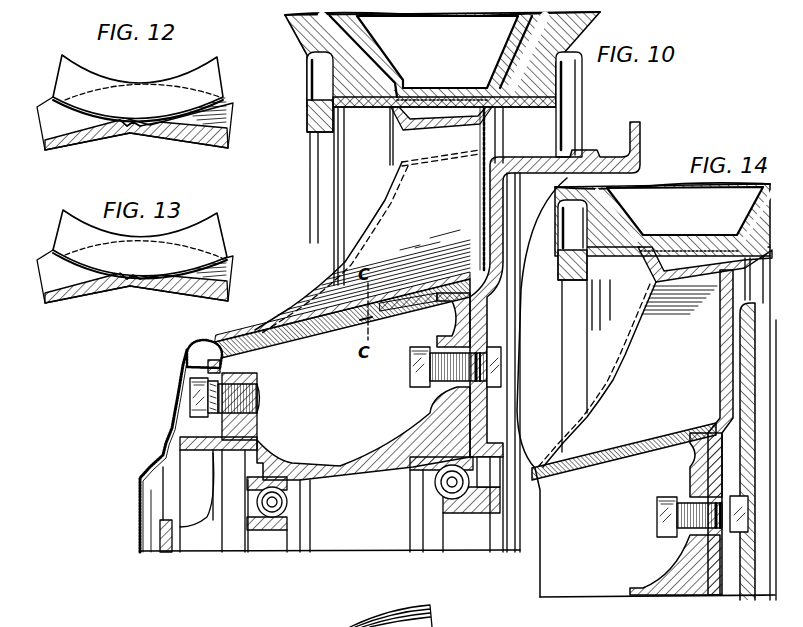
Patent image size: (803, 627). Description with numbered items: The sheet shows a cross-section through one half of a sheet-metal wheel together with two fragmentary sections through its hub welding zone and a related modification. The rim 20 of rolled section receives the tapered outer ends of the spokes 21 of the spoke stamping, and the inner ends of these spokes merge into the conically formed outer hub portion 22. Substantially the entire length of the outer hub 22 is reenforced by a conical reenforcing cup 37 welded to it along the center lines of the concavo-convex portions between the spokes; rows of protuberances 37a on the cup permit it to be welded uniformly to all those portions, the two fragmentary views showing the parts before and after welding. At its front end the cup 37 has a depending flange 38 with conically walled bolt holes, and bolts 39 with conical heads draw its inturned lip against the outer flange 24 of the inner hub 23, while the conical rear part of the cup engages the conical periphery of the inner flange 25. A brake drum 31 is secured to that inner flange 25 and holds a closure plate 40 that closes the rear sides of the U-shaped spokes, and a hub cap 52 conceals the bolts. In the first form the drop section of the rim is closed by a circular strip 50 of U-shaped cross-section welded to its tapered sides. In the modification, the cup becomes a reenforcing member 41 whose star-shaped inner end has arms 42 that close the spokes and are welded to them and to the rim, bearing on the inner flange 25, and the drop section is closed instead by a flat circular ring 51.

In FIG. 10, the rim 20 is at (568, 100).
In FIG. 14, the rim 20 is at (573, 285).
In FIG. 10, the spokes 21 is at (377, 220).
In FIG. 14, the spokes 21 is at (630, 353).
In FIG. 12, the outer hub portion 22 is at (172, 82).
In FIG. 13, the outer hub portion 22 is at (187, 237).
In FIG. 10, the inner hub 23 is at (343, 463).
In FIG. 14, the inner hub 23 is at (657, 584).
In FIG. 10, the outer flange 24 is at (250, 423).
In FIG. 10, the inner flange 25 is at (443, 318).
In FIG. 14, the inner flange 25 is at (693, 467).
In FIG. 10, the brake drum 31 is at (502, 217).
In FIG. 14, the brake drum 31 is at (742, 353).
In FIG. 12, the reenforcing cup 37 is at (53, 127).
In FIG. 13, the reenforcing cup 37 is at (57, 275).
In FIG. 10, the reenforcing cup 37 is at (337, 336).
In FIG. 12, the protuberances 37a is at (128, 133).
In FIG. 13, the protuberances 37a is at (127, 287).
In FIG. 10, the protuberances 37a is at (365, 345).
In FIG. 10, the depending flange 38 is at (203, 358).
In FIG. 10, the bolts 39 is at (258, 399).
In FIG. 10, the closure plate 40 is at (485, 158).
In FIG. 14, the reenforcing member 41 is at (585, 480).
In FIG. 14, the arms 42 is at (720, 318).
In FIG. 10, the circular strip 50 is at (423, 107).
In FIG. 14, the circular ring 51 is at (668, 258).
In FIG. 10, the hub cap 52 is at (143, 517).